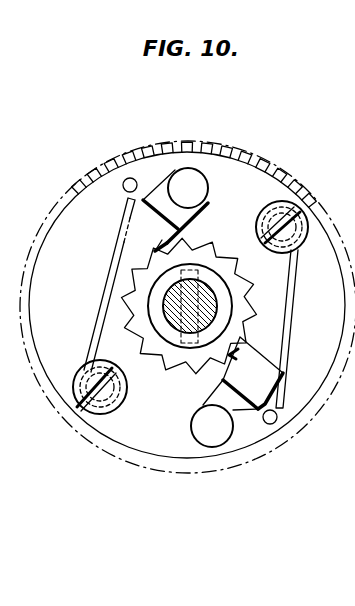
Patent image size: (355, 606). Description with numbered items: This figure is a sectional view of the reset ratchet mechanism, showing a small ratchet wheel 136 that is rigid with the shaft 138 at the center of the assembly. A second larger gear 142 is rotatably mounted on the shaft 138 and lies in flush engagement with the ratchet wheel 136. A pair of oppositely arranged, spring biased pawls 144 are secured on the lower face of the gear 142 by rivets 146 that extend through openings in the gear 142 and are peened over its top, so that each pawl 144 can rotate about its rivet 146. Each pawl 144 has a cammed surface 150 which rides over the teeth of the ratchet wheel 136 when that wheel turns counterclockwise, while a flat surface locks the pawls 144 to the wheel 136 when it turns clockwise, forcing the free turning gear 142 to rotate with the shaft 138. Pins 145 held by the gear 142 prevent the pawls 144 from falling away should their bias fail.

The ratchet wheel 136 is at (218, 252).
The shaft 138 is at (214, 306).
The gear 142 is at (188, 143).
The pawl 144 is at (145, 204).
The pin 145 is at (128, 179).
The rivet 146 is at (203, 176).
The cammed surface 150 is at (150, 252).